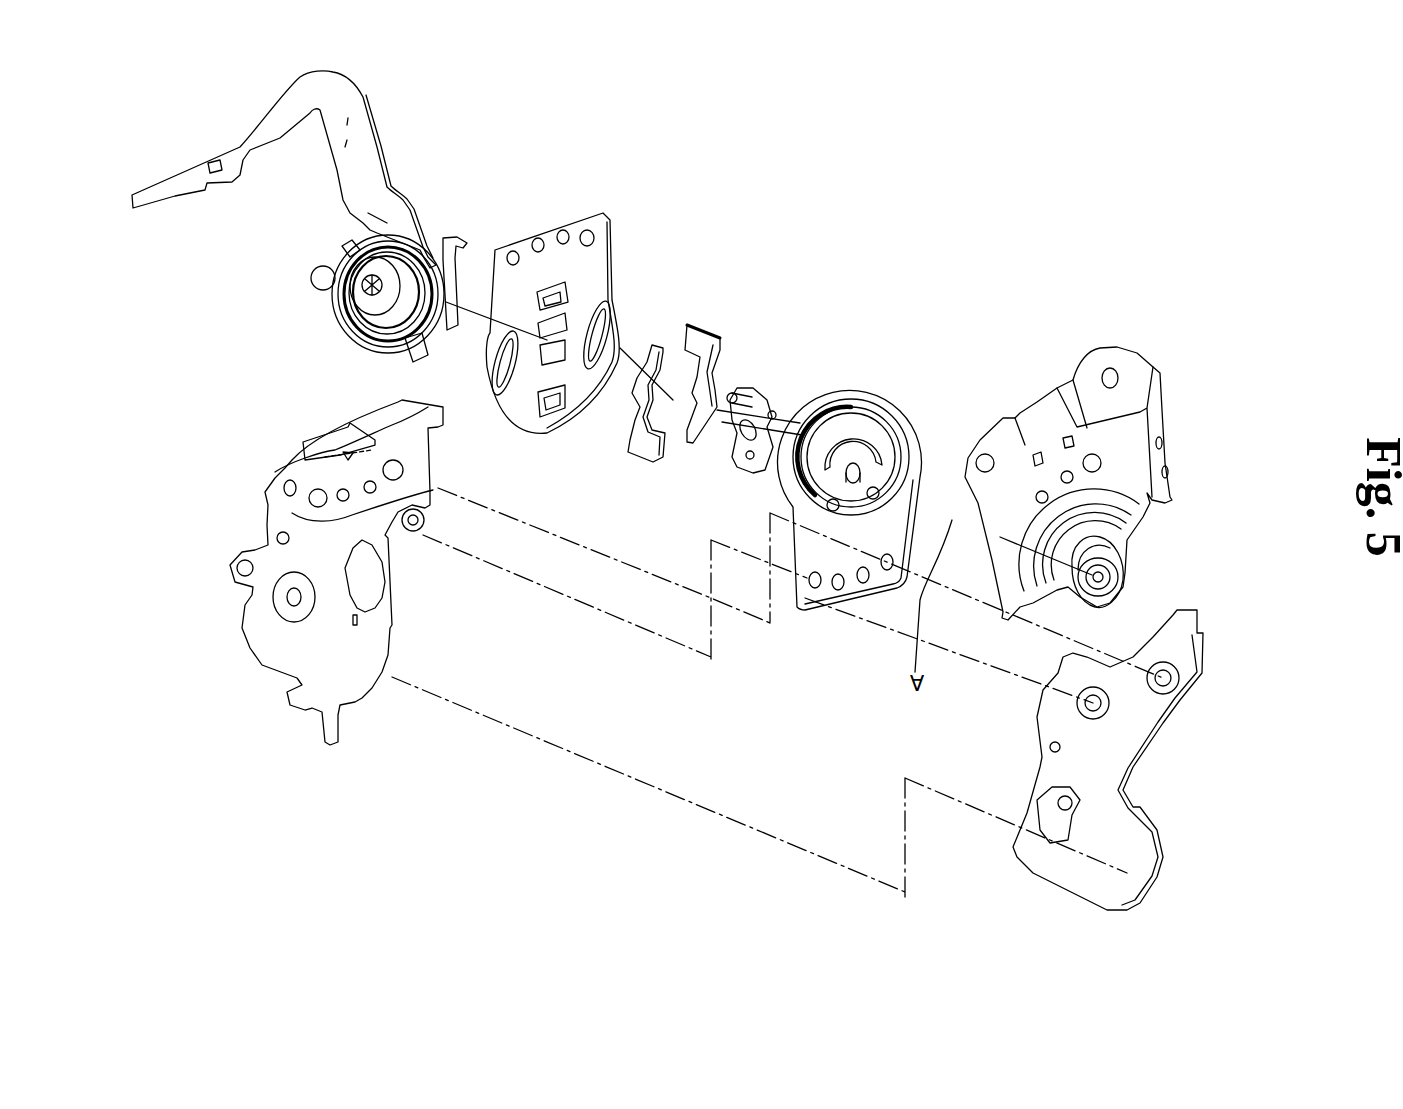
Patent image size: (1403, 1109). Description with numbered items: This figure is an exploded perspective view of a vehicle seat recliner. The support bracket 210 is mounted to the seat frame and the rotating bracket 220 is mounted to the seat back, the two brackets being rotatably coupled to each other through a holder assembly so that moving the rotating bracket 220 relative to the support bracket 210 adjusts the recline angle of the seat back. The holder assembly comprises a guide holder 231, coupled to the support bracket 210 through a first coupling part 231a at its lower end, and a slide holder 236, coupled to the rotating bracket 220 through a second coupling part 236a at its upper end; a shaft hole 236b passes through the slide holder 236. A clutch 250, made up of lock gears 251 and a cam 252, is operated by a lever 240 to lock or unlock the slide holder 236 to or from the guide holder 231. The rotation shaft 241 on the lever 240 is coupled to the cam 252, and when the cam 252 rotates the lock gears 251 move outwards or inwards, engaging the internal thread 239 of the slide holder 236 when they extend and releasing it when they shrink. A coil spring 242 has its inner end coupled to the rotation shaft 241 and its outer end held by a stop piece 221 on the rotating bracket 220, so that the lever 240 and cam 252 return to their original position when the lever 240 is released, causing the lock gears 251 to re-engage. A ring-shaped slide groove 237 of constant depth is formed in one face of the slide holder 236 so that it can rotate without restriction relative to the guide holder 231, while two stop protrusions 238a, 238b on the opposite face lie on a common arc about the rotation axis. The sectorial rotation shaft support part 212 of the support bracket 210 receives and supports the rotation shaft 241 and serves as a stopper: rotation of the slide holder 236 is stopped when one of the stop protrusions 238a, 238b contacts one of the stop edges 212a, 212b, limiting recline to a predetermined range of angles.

The support bracket 210 is at (1130, 337).
The rotation shaft support part 212 is at (1118, 582).
The stop edge 212a is at (1082, 592).
The stop edge 212b is at (1123, 558).
The rotating bracket 220 is at (266, 687).
The stop piece 221 is at (360, 423).
The guide holder 231 is at (615, 232).
The first coupling part 231a is at (583, 227).
The slide holder 236 is at (828, 469).
The second coupling part 236a is at (815, 592).
The cam surface 236b is at (847, 447).
The slide groove 237 is at (847, 403).
The stop protrusion 238a is at (833, 505).
The stop protrusion 238b is at (873, 490).
The internal thread 239 is at (847, 473).
The lever 240 is at (237, 143).
The rotation shaft 241 is at (363, 274).
The coil spring 242 is at (332, 338).
The clutch 250 is at (742, 244).
The lock gears 251 is at (717, 337).
The cam 252 is at (775, 393).